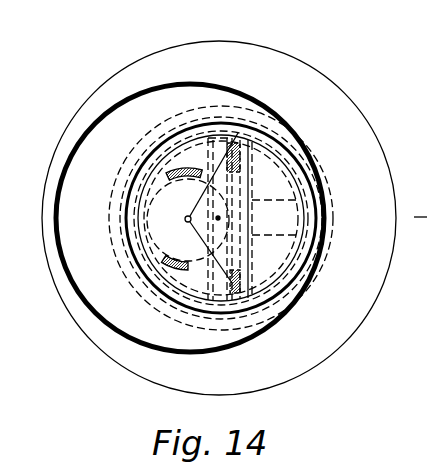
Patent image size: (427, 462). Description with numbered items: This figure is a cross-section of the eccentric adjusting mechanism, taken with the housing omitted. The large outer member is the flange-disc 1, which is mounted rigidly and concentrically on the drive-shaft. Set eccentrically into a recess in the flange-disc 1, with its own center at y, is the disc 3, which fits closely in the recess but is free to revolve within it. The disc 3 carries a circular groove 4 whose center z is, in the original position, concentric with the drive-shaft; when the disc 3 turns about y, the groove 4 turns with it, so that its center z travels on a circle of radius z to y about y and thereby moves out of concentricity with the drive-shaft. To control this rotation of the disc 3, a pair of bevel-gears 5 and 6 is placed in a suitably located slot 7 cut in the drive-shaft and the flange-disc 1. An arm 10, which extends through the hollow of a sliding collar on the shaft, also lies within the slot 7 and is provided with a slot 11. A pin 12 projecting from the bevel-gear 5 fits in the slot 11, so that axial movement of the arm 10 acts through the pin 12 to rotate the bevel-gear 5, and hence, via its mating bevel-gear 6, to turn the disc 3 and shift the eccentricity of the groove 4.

The flange-disc 1 is at (361, 107).
The disc 3 is at (100, 325).
The circular groove 4 is at (135, 254).
The bevel-gear 5 is at (250, 314).
The bevel-gear 6 is at (175, 272).
The slot 7 is at (270, 133).
The arm 10 is at (247, 137).
The slot 11 is at (203, 127).
The pin 12 is at (160, 168).